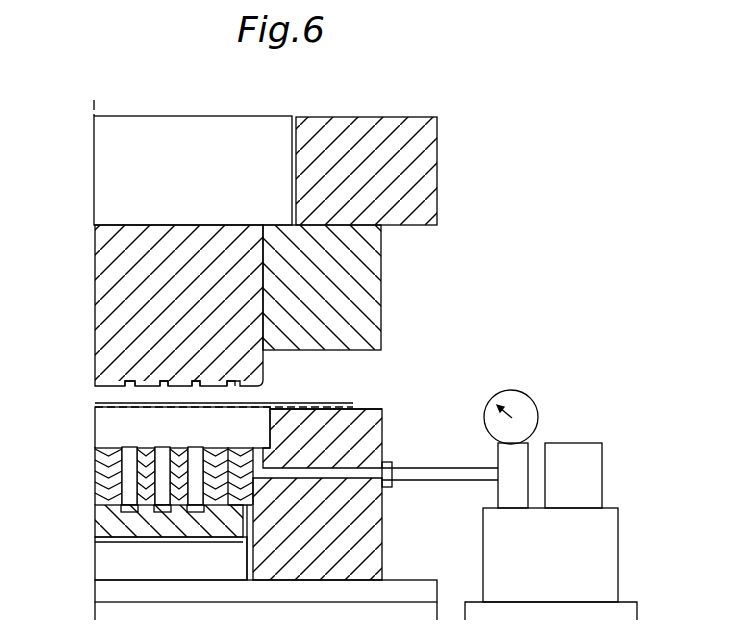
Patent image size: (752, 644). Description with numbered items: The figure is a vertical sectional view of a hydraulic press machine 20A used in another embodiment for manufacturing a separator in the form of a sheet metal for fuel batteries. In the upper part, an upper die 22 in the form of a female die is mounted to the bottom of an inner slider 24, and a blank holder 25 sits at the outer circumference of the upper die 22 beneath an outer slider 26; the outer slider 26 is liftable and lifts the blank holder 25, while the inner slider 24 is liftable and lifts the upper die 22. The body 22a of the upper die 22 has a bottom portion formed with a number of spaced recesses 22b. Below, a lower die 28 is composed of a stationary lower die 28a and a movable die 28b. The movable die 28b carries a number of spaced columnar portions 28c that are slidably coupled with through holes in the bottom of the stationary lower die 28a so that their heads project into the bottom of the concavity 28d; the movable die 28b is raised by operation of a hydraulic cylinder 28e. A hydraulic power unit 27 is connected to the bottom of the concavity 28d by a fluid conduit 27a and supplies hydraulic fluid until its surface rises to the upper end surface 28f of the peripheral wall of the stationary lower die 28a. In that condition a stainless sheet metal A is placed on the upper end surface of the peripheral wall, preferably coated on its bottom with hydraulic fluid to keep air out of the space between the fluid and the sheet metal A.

The hydraulic press machine 20A is at (133, 110).
The inner slider 24 is at (211, 128).
The outer slider 26 is at (353, 125).
The upper die 22 is at (96, 241).
The body of upper die 22a is at (121, 307).
The recesses 22b is at (115, 381).
The blank holder 25 is at (369, 285).
The sheet metal A is at (333, 402).
The lower die 28 is at (297, 582).
The stationary lower die 28a is at (362, 560).
The movable die 28b is at (122, 524).
The columnar portions 28c is at (113, 478).
The concavity 28d is at (123, 425).
The hydraulic cylinder 28e is at (158, 572).
The upper end surface 28f is at (372, 406).
The hydraulic power unit 27 is at (596, 556).
The fluid conduit 27a is at (437, 480).